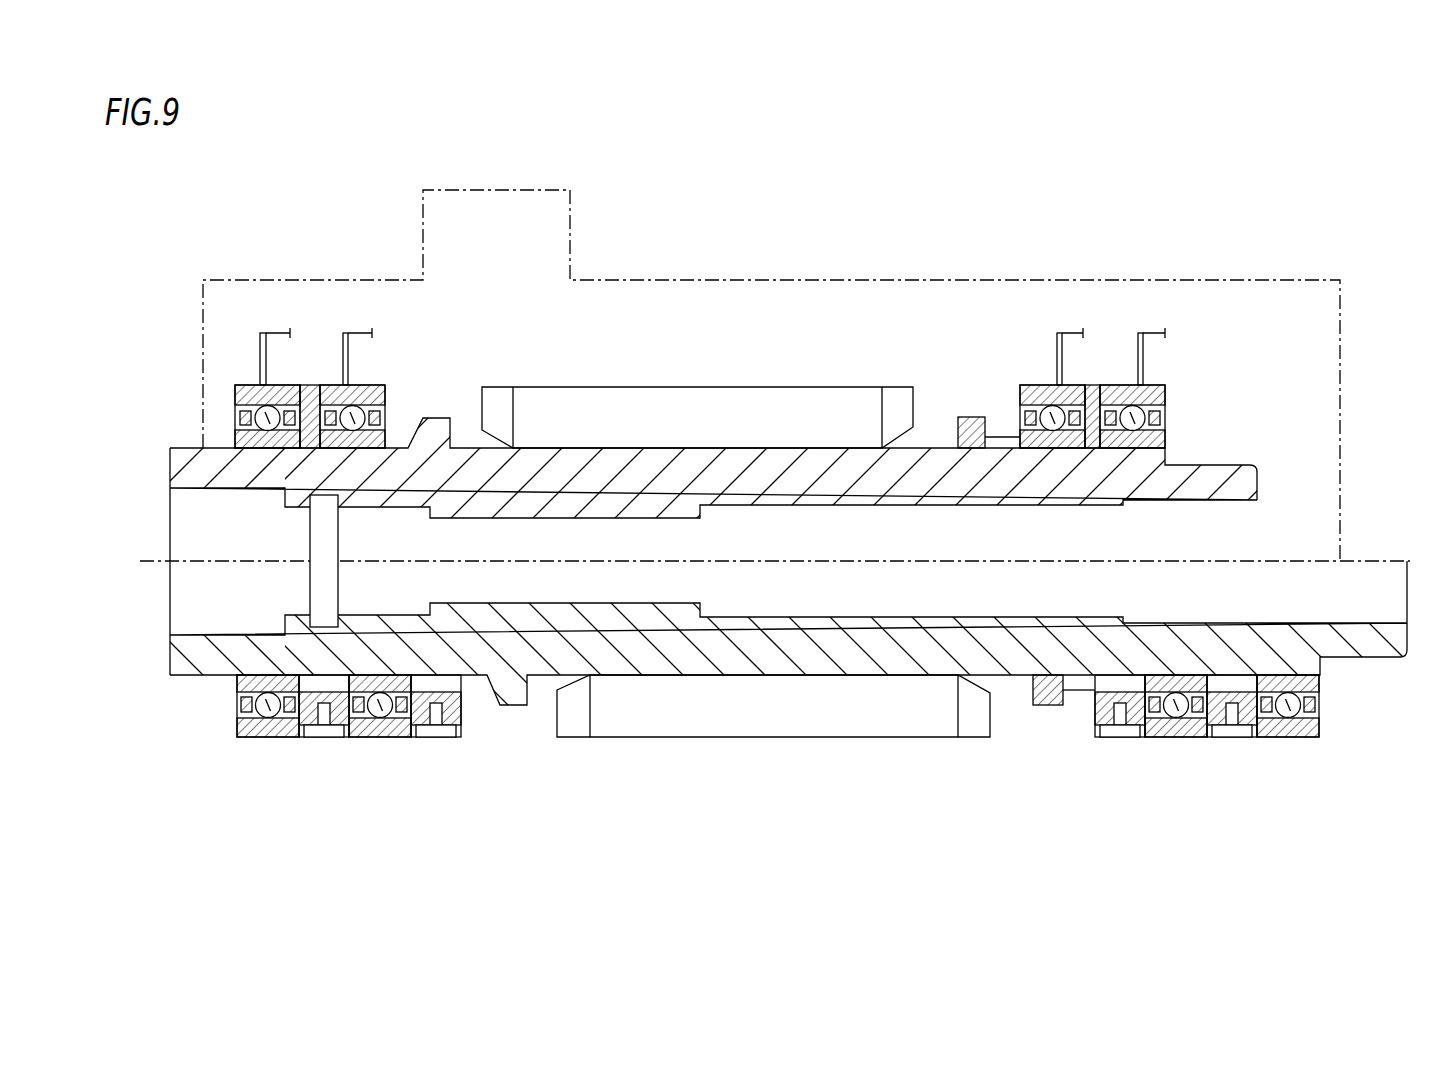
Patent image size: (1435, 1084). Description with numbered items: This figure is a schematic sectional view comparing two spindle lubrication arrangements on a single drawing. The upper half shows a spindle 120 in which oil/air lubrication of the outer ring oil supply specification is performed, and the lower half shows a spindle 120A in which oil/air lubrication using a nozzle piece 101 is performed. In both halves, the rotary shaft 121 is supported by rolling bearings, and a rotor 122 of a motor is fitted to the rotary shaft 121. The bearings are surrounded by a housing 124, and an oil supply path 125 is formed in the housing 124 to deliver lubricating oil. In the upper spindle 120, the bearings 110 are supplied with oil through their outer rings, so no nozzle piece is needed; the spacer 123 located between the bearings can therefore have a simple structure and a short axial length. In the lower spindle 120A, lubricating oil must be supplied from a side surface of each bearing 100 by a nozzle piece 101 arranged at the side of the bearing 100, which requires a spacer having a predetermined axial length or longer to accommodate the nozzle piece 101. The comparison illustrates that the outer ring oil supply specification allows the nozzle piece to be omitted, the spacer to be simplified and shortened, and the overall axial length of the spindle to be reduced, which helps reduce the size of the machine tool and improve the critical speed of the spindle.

The bearing 100 is at (265, 749).
The nozzle piece for oil supply 101 is at (320, 749).
The rolling bearing 110 is at (277, 371).
The spindle 120 is at (1194, 338).
The spindle 120A is at (1193, 814).
The rotary shaft 121 is at (712, 478).
The rotor of a motor 122 is at (790, 707).
The spacer 123 is at (305, 393).
The housing 124 is at (833, 308).
The oil supply path 125 is at (250, 362).